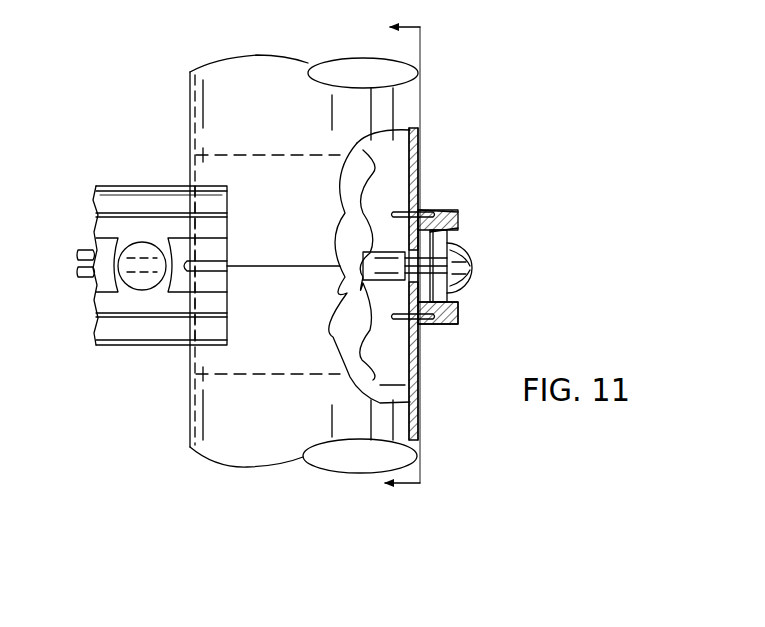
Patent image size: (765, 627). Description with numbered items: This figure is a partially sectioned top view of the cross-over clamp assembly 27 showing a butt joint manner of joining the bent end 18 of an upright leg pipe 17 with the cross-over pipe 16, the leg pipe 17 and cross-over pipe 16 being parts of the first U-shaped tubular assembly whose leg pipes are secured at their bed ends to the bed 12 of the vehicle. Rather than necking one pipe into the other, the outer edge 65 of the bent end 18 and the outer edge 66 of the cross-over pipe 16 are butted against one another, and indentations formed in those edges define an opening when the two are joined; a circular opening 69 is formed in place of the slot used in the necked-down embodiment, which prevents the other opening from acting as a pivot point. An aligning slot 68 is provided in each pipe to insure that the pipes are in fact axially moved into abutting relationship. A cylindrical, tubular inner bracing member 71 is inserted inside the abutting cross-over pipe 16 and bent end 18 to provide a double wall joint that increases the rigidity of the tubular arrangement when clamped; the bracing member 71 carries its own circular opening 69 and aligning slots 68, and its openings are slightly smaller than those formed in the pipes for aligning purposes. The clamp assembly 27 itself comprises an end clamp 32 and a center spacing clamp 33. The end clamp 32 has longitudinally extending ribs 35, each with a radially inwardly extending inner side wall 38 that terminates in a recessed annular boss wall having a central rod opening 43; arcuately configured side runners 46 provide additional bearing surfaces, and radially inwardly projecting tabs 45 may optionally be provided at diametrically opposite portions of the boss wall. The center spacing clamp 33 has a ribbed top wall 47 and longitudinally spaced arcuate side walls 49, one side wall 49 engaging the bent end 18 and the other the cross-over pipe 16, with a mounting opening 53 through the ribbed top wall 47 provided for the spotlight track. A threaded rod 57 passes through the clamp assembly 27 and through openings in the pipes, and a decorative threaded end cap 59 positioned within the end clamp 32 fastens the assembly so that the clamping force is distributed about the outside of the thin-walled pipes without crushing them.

The bed 12 is at (422, 256).
The cross-over pipe 16 is at (420, 373).
The upright leg pipe 17 is at (243, 55).
The bent end 18 is at (430, 138).
The cross-over clamp assembly 27 is at (88, 142).
The end clamp 32 is at (457, 205).
The center spacing clamp 33 is at (110, 184).
The rib 35 is at (468, 213).
The inner side wall 38 is at (458, 298).
The central rod opening 43 is at (460, 268).
The tab 45 is at (395, 305).
The side runner 46 is at (428, 207).
The ribbed top wall 47 is at (157, 190).
The arcuate side wall 49 is at (135, 184).
The mounting opening 53 is at (140, 287).
The threaded rod 57 is at (382, 280).
The decorative threaded end cap 59 is at (460, 257).
The outer edge 65 is at (257, 268).
The outer edge 66 is at (297, 265).
The aligning slot 68 is at (393, 212).
The circular opening 69 is at (462, 280).
The inner bracing member 71 is at (377, 370).